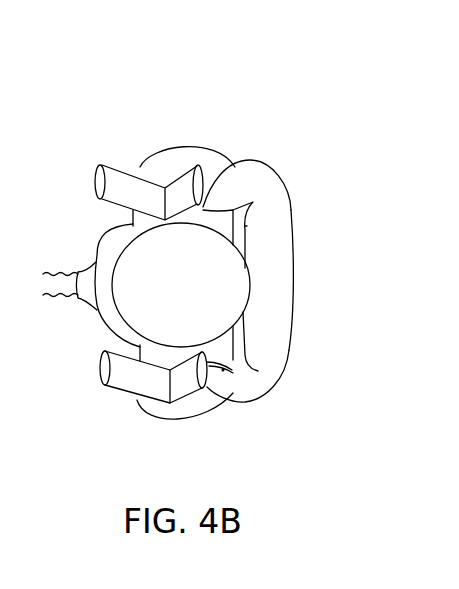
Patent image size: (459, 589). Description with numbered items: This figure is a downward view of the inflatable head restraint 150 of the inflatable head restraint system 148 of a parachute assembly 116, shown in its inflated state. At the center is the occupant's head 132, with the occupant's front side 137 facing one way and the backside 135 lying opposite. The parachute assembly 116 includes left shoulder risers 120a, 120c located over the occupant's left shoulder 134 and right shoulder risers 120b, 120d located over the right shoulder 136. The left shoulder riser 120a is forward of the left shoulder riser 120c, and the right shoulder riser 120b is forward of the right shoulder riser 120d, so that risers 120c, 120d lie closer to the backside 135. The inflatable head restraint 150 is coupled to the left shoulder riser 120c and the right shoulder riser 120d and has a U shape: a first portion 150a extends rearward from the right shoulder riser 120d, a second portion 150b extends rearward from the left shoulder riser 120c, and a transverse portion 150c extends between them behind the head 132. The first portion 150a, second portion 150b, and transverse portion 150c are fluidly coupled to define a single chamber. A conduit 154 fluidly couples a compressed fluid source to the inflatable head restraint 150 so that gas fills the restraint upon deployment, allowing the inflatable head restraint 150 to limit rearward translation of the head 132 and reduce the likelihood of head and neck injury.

The parachute assembly 116 is at (126, 71).
The inflatable head restraint system 148 is at (279, 130).
The inflatable head restraint 150 is at (277, 287).
The first portion 150a is at (230, 178).
The second portion 150b is at (233, 388).
The transverse portion 150c is at (283, 303).
The backside 135 is at (245, 226).
The conduit 154 is at (233, 372).
The head 132 is at (177, 295).
The front side 137 is at (133, 227).
The left shoulder 134 is at (177, 412).
The right shoulder 136 is at (170, 158).
The left shoulder riser 120a is at (163, 407).
The right shoulder riser 120b is at (157, 168).
The left shoulder riser 120c is at (177, 389).
The right shoulder riser 120d is at (196, 166).